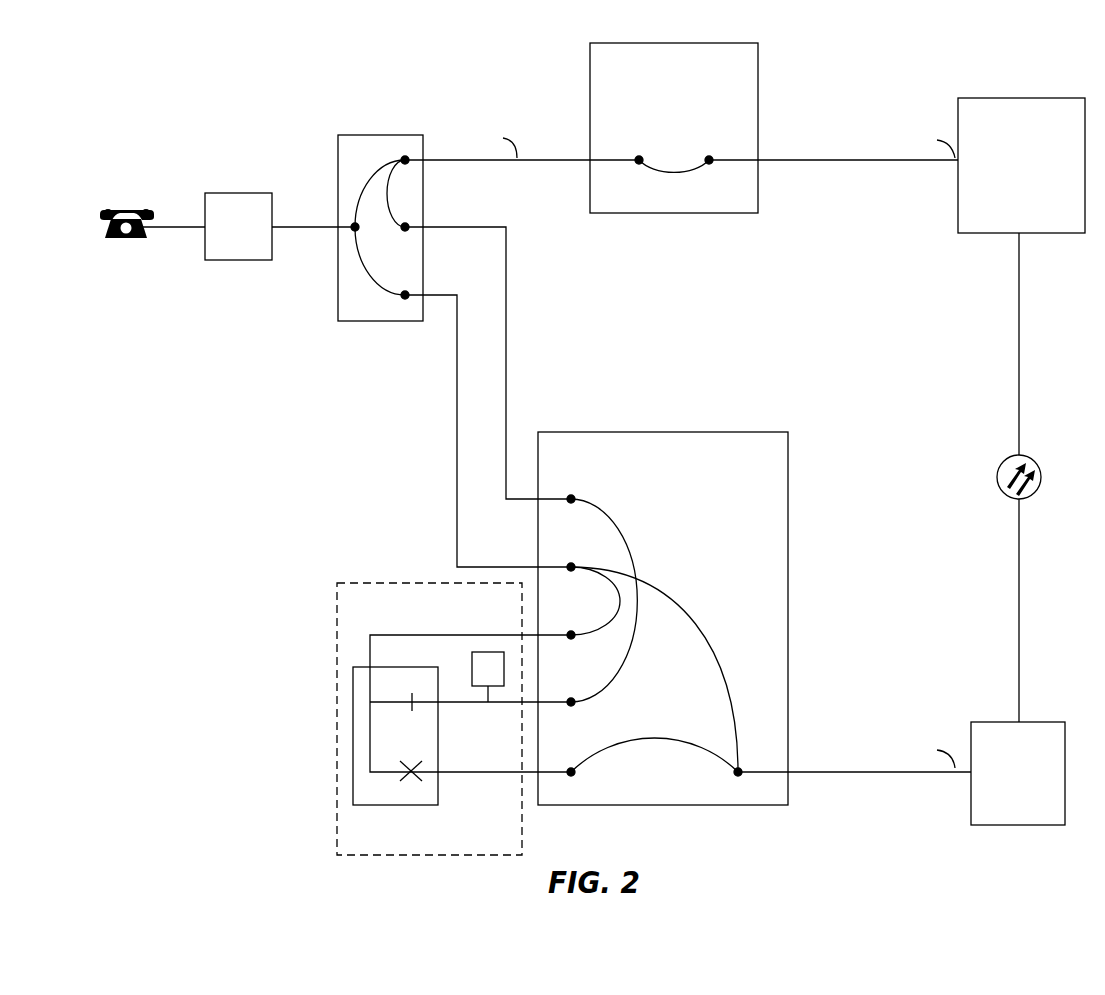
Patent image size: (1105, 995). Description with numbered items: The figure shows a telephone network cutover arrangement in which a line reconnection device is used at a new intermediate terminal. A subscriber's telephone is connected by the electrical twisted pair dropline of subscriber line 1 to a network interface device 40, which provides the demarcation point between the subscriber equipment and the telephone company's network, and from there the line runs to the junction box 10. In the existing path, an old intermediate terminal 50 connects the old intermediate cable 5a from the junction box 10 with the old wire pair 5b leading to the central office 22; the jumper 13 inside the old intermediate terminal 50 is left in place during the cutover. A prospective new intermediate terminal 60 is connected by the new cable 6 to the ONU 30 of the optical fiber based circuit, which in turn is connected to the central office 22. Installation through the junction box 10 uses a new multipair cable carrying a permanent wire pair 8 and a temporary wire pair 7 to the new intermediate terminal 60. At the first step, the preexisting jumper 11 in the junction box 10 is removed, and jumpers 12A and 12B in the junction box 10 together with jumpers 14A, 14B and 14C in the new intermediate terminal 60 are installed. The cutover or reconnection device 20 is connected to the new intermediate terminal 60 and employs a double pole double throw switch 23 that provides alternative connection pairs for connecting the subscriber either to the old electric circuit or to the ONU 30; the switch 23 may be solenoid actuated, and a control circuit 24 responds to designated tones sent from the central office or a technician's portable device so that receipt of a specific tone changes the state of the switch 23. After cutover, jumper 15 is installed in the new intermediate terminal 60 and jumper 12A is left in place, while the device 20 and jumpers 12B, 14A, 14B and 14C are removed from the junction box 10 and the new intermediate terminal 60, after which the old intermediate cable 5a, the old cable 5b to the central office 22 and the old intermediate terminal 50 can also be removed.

The subscriber line 1 is at (317, 233).
The old intermediate cable 5a is at (548, 167).
The old wire pair to the central office 5b is at (848, 170).
The new cable 6 is at (863, 779).
The temporary wire pair 7 is at (528, 340).
The permanent wire pair 8 is at (449, 435).
The junction box 10 is at (335, 164).
The preexisting jumper 11 is at (367, 178).
The jumper 12A is at (373, 268).
The jumper 12B is at (397, 178).
The jumper 13 is at (665, 184).
The jumper 14A is at (628, 537).
The jumper 14B is at (603, 623).
The jumper 14C is at (677, 745).
The jumper 15 is at (713, 653).
The cutover or reconnection device 20 is at (370, 576).
The central office 22 is at (992, 92).
The double pole double throw switch 23 is at (425, 812).
The control circuit 24 is at (467, 675).
The ONU 30 is at (990, 718).
The network interface device 40 is at (240, 265).
The old intermediate terminal 50 is at (720, 38).
The new intermediate terminal 60 is at (748, 430).